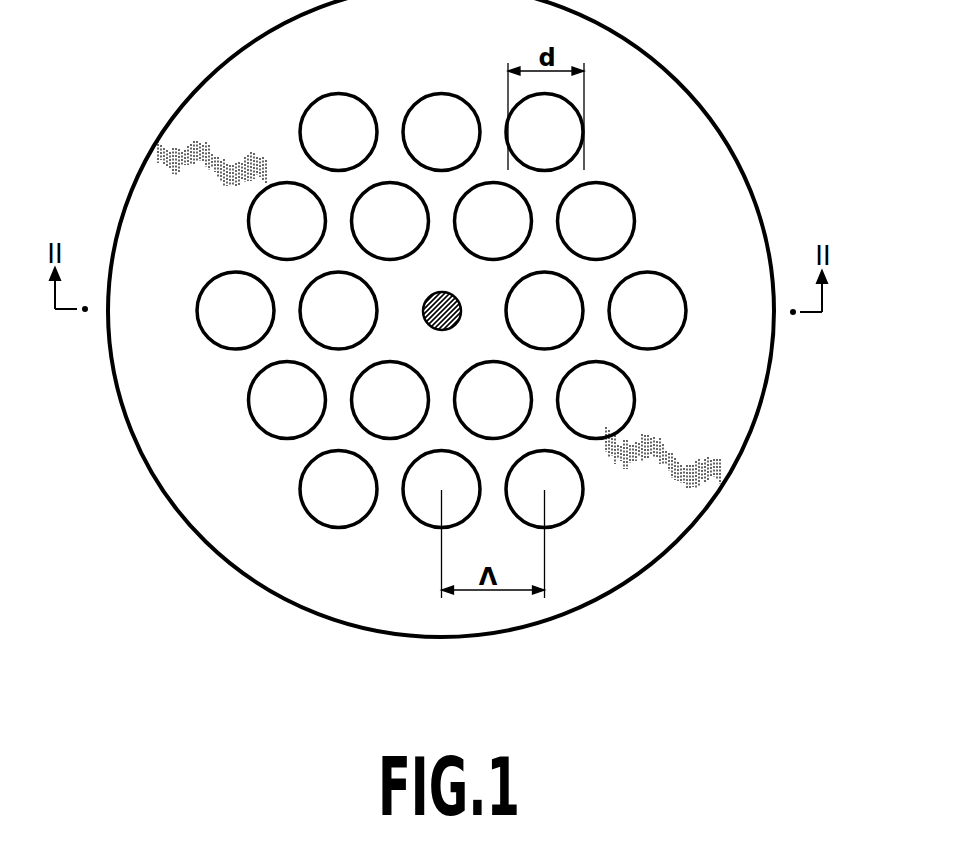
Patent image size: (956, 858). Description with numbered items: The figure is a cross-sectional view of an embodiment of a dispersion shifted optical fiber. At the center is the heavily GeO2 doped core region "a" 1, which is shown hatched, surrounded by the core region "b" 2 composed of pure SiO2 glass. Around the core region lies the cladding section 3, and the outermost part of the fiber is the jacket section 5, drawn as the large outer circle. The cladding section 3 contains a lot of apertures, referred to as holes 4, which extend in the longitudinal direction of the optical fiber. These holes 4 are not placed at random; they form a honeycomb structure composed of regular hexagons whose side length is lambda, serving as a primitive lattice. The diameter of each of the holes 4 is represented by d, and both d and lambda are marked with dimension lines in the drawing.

The core region "a" 1 is at (457, 302).
The core region "b" 2 is at (482, 333).
The cladding section 3 is at (538, 427).
The holes 4 is at (555, 487).
The jacket section 5 is at (163, 412).